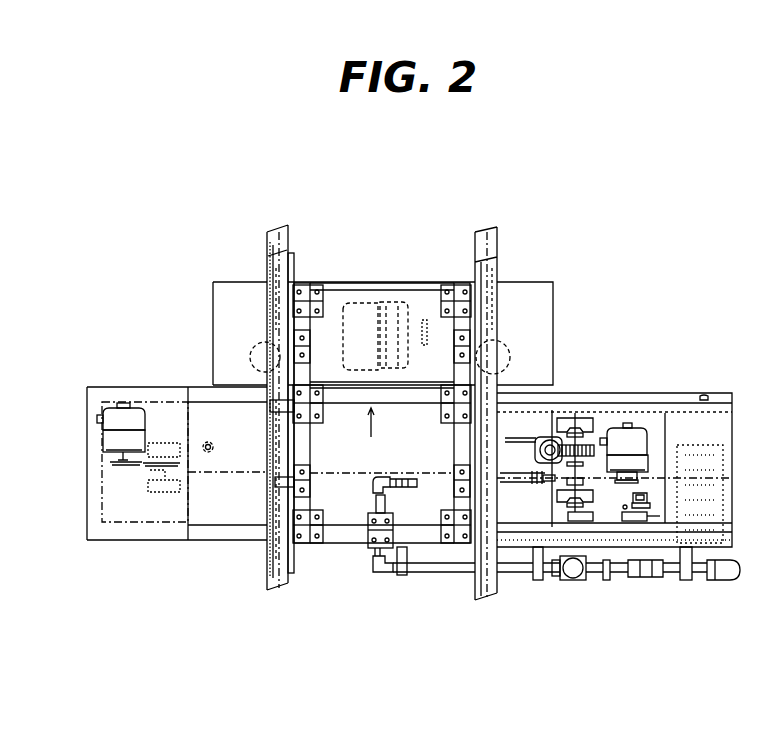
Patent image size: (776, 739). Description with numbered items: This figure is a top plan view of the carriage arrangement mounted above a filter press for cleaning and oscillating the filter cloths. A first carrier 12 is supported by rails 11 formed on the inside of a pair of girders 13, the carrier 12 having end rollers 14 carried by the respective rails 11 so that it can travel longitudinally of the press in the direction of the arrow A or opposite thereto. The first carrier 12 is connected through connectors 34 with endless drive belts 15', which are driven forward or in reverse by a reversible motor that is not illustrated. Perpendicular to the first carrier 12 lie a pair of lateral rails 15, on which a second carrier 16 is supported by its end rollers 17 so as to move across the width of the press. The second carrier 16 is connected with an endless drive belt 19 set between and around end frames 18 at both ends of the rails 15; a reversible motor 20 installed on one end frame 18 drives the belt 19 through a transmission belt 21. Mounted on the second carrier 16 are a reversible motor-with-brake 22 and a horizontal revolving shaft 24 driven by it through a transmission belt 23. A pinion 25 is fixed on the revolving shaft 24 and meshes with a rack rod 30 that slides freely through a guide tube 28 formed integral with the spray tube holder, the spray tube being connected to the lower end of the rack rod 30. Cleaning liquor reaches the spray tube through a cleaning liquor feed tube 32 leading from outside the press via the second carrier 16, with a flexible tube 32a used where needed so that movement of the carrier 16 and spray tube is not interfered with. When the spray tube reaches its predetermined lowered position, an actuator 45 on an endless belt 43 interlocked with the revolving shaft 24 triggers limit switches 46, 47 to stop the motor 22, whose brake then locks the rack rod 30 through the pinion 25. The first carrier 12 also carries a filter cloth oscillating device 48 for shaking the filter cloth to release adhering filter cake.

The rail 11 is at (280, 263).
The first carrier 12 is at (308, 440).
The girder 13 is at (288, 237).
The end roller 14 is at (266, 408).
The rail 15 is at (177, 464).
The endless drive belt 15' is at (379, 400).
The second carrier 16 is at (549, 507).
The end roller 17 is at (700, 403).
The end frame 18 is at (152, 522).
The endless drive belt 19 is at (213, 473).
The reversible motor 20 is at (130, 420).
The transmission belt 21 is at (142, 468).
The reversible motor-with-brake 22 is at (640, 432).
The transmission belt 23 is at (612, 487).
The revolving shaft 24 is at (577, 420).
The pinion 25 is at (594, 450).
The guide tube 28 is at (536, 450).
The rack rod 30 is at (535, 437).
The cleaning liquor feed tube 32 is at (445, 577).
The flexible tube 32a is at (420, 478).
The connector 34 is at (268, 332).
The endless belt 43 is at (622, 510).
The actuator 45 is at (578, 520).
The limit switch 46 is at (583, 522).
The limit switch 47 is at (640, 522).
The filter cloth oscillating device 48 is at (547, 293).